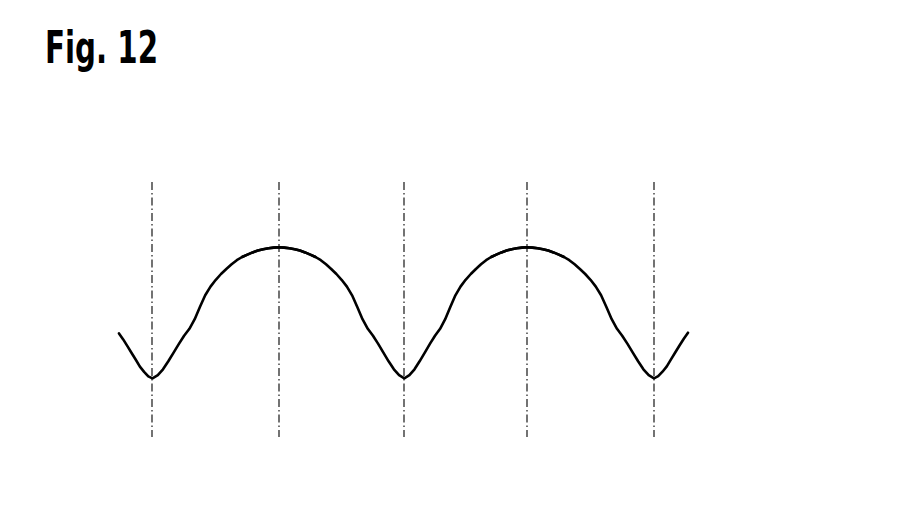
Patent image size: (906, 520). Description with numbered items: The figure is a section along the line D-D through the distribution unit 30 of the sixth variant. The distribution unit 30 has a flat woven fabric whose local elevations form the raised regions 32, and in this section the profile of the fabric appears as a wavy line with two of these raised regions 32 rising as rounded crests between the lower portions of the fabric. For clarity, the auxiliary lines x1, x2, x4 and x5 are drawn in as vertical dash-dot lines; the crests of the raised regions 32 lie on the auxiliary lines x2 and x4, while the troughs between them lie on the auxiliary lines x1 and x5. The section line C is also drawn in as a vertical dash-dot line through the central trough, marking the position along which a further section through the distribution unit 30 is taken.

The distribution unit 30 is at (692, 171).
The raised region 32 is at (318, 257).
The auxiliary line X1 x1 is at (152, 294).
The auxiliary line X2 x2 is at (279, 294).
The auxiliary line X4 x4 is at (527, 294).
The auxiliary line X5 x5 is at (654, 294).
The section line C is at (405, 327).